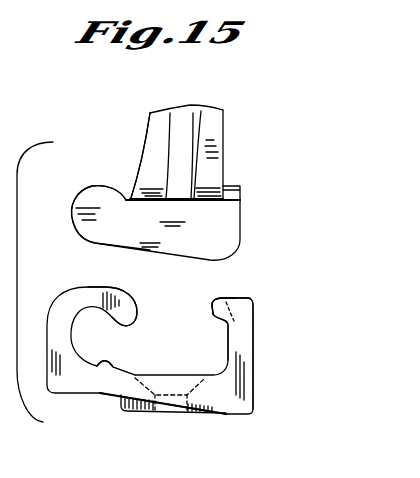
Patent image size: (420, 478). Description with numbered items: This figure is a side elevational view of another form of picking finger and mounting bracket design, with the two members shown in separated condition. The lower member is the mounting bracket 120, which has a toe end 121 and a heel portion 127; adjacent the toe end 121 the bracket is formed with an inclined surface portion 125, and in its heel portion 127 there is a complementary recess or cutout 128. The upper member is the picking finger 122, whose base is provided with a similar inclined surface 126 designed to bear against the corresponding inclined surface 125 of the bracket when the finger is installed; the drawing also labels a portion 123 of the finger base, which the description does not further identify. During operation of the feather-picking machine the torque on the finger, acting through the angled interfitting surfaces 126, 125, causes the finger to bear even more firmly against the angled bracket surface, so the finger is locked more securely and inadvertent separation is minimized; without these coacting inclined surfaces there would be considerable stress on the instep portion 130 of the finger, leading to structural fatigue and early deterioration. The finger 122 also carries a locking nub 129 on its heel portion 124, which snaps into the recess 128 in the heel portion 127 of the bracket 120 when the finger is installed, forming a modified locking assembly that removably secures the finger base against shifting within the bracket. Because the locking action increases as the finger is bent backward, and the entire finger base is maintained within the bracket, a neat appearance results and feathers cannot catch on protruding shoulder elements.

The mounting bracket 120 is at (256, 385).
The toe end 121 is at (115, 293).
The picking finger 122 is at (229, 151).
The rounded lobe 123 is at (88, 193).
The heel portion 124 is at (223, 235).
The inclined surface portion 125 is at (110, 372).
The inclined surface 126 is at (92, 242).
The heel portion 127 is at (246, 339).
The recess or cutout 128 is at (224, 299).
The locking nub 129 is at (241, 187).
The instep portion 130 is at (144, 150).